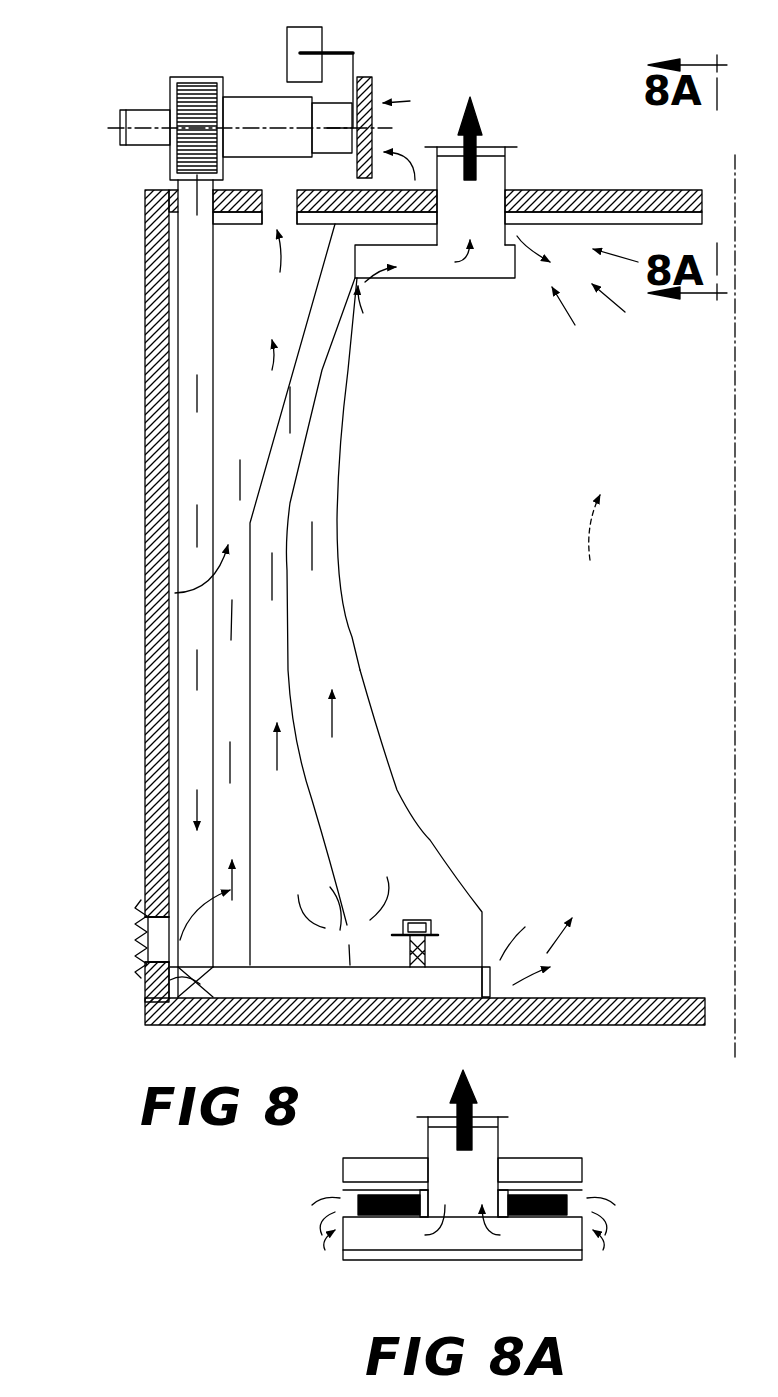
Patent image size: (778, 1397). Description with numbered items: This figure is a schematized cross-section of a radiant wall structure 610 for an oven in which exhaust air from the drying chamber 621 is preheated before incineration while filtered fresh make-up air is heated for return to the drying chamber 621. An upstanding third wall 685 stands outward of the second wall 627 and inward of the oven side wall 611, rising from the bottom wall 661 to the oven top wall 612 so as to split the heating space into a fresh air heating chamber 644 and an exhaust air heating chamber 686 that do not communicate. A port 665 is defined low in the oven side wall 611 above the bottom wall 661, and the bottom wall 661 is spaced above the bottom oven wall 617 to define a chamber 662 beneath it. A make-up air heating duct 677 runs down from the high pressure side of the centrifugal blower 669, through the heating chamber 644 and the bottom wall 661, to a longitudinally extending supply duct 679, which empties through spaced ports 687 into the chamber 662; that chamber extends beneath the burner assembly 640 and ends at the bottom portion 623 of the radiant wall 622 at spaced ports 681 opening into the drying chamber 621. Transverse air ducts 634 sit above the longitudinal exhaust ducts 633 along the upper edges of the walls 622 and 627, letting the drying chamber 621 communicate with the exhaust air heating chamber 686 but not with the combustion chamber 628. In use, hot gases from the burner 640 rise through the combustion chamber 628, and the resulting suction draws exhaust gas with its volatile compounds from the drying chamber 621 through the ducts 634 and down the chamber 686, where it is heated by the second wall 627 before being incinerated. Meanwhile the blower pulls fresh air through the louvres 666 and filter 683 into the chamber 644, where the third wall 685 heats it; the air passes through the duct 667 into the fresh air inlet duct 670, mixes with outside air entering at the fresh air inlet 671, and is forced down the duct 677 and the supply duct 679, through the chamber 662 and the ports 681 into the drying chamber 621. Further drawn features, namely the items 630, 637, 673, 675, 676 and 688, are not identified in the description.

In FIG. 8, the heating apparatus 610 is at (100, 172).
In FIG. 8, the oven side wall 611 is at (145, 268).
In FIG. 8, the oven top wall 612 is at (688, 190).
In FIG. 8, the bottom oven wall 617 is at (478, 1012).
In FIG. 8, the drying chamber 621 is at (627, 640).
In FIG. 8, the radiant wall 622 is at (376, 723).
In FIG. 8, the bottom portion 623 is at (484, 920).
In FIG. 8, the second wall 627 is at (308, 780).
In FIG. 8, the combustion chamber 628 is at (340, 640).
In FIG. 8, the flow arrow 630 is at (360, 288).
In FIG. 8, the exhaust ducts 633 is at (420, 272).
In FIG. 8A, the exhaust ducts 633 is at (380, 1240).
In FIG. 8, the transverse air ducts 634 is at (517, 258).
In FIG. 8A, the transverse air ducts 634 is at (570, 1205).
In FIG. 8, the exhaust chimney 637 is at (505, 172).
In FIG. 8A, the exhaust chimney 637 is at (490, 1150).
In FIG. 8, the burner assembly 640 is at (420, 916).
In FIG. 8, the fresh air heating chamber 644 is at (228, 285).
In FIG. 8, the bottom wall 661 is at (310, 963).
In FIG. 8, the chamber 662 is at (308, 990).
In FIG. 8, the port 665 is at (135, 968).
In FIG. 8, the louvres 666 is at (135, 912).
In FIG. 8, the duct 667 is at (282, 168).
In FIG. 8, the centrifugal blower 669 is at (142, 112).
In FIG. 8, the fresh air inlet duct 670 is at (263, 97).
In FIG. 8, the fresh air inlet 671 is at (323, 147).
In FIG. 8, the air flow arrow 673 is at (385, 92).
In FIG. 8, the control unit 675 is at (322, 33).
In FIG. 8, the fan plate 676 is at (340, 108).
In FIG. 8, the make-up air heating duct 677 is at (180, 467).
In FIG. 8, the supply duct 679 is at (148, 992).
In FIG. 8, the spaced ports 681 is at (490, 990).
In FIG. 8, the filter 683 is at (146, 900).
In FIG. 8, the third wall 685 is at (277, 427).
In FIG. 8, the exhaust air heating chamber 686 is at (284, 478).
In FIG. 8, the spaced ports 687 is at (219, 985).
In FIG. 8, the fan gear housing 688 is at (198, 74).